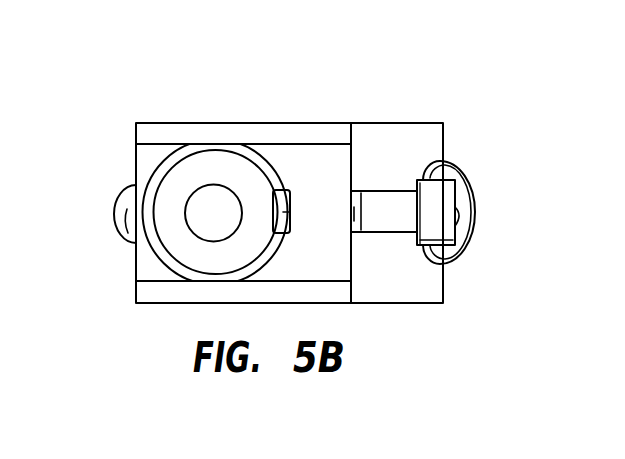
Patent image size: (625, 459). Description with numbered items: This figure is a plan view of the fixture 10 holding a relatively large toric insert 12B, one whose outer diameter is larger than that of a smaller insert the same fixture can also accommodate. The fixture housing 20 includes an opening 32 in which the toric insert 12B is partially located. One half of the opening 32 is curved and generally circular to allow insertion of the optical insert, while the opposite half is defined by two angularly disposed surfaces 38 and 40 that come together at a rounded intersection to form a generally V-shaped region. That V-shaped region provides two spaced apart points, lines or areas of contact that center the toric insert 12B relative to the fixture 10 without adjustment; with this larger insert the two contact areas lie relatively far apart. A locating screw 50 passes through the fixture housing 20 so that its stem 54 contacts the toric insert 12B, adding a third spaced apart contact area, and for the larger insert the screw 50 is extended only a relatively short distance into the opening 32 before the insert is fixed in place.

The fixture 10 is at (422, 318).
The toric insert 12B is at (167, 188).
The fixture housing 20 is at (327, 105).
The opening 32 is at (270, 173).
The angularly disposed surface 38 is at (185, 156).
The angularly disposed surface 40 is at (153, 242).
The locating screw 50 is at (433, 208).
The stem 54 is at (387, 200).